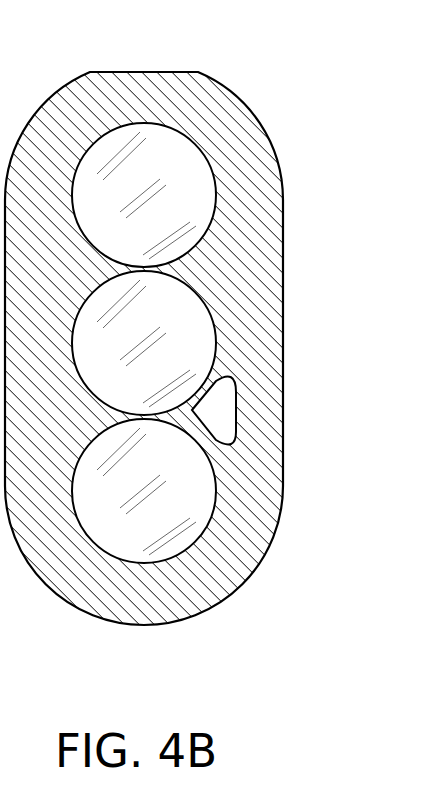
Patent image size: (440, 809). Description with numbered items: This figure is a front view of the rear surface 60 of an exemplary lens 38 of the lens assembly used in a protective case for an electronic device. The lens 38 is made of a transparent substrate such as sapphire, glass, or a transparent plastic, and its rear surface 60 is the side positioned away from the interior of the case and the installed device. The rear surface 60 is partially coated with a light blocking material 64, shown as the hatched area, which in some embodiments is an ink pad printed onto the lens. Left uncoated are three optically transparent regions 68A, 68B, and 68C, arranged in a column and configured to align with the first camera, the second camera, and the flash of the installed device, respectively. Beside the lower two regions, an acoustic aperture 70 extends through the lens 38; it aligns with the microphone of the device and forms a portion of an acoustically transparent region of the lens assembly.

The lens 38 is at (264, 53).
The rear surface 60 is at (105, 88).
The light blocking material 64 is at (221, 122).
The first optically transparent region 68A is at (183, 197).
The second optically transparent region 68B is at (183, 505).
The third optically transparent region 68C is at (183, 343).
The acoustic aperture 70 is at (222, 420).